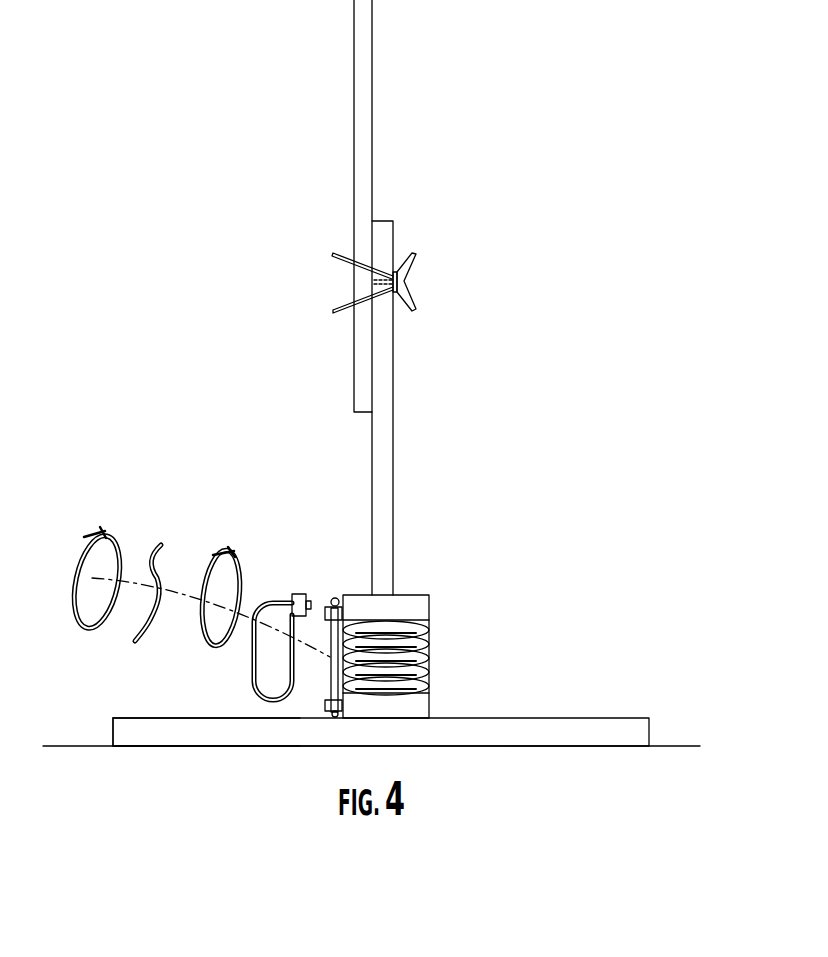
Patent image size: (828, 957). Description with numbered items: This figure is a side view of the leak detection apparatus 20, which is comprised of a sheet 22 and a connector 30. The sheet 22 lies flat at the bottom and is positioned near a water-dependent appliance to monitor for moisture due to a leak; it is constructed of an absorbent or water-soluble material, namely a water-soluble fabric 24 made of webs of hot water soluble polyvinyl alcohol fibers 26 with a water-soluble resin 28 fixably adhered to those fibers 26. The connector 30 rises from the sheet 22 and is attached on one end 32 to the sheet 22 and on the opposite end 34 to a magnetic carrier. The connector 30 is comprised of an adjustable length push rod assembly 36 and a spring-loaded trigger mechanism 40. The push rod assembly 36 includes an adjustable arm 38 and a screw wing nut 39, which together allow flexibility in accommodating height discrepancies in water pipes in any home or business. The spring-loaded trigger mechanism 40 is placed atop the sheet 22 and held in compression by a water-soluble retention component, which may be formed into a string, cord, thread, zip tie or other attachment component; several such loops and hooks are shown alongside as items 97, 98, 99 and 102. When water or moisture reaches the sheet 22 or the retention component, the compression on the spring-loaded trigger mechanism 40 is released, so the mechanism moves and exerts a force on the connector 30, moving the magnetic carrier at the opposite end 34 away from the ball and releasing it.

The leak detection apparatus 20 is at (614, 103).
The sheet 22 is at (126, 718).
The water-soluble fabric 24 is at (172, 730).
The polyvinyl alcohol fibers 26 is at (195, 730).
The water-soluble resin 28 is at (222, 726).
The connector 30 is at (322, 150).
The one end of connector 32 is at (432, 708).
The opposite end of connector 34 is at (329, 592).
The adjustable length push rod assembly 36 is at (383, 403).
The adjustable arm 38 is at (364, 218).
The screw wing nut 39 is at (420, 263).
The spring-loaded trigger mechanism 40 is at (429, 657).
The rope loop 97 is at (213, 556).
The hook 98 is at (148, 556).
The rope loop 99 is at (75, 578).
The carabiner hook 102 is at (272, 600).